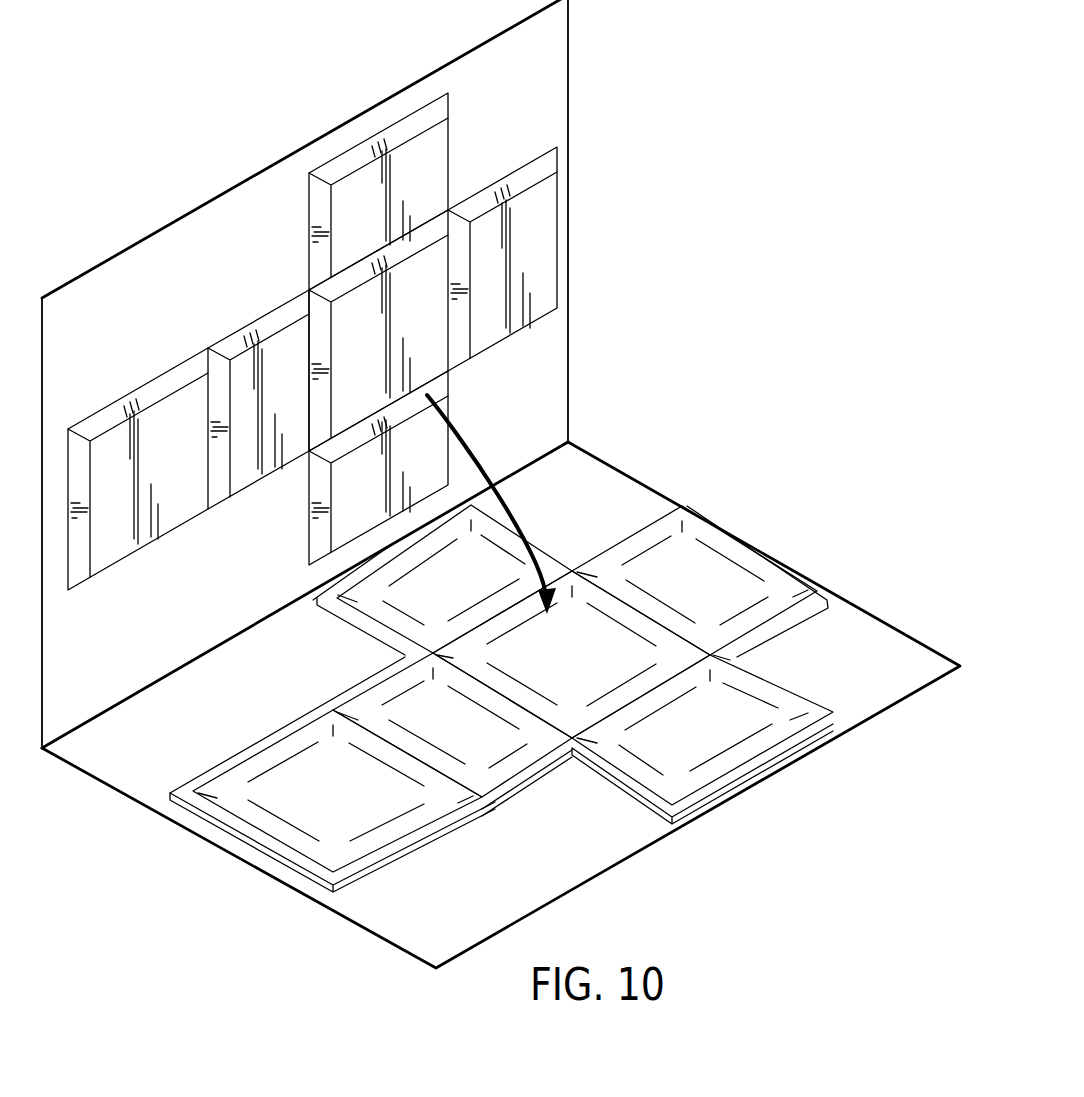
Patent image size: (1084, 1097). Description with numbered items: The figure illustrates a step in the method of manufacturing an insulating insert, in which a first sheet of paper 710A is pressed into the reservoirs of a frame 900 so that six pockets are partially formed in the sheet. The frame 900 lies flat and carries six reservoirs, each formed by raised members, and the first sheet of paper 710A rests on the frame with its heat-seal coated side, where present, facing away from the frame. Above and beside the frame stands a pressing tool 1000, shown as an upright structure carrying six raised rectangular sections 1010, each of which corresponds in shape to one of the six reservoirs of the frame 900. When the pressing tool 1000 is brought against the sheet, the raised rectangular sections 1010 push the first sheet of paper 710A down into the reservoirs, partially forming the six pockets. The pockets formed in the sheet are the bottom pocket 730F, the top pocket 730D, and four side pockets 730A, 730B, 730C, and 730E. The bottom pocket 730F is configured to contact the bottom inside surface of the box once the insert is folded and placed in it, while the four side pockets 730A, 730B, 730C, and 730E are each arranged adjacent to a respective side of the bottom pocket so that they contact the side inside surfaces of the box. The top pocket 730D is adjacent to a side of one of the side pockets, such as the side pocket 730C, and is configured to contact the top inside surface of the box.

The pressing tool 1000 is at (570, 75).
The raised rectangular sections 1010 is at (439, 165).
The frame 900 is at (688, 432).
The first sheet of paper 710A is at (764, 553).
The side pocket 730A is at (722, 603).
The side pocket 730B is at (481, 603).
The side pocket 730C is at (476, 744).
The top pocket 730D is at (361, 813).
The side pocket 730E is at (721, 745).
The bottom pocket 730F is at (599, 675).